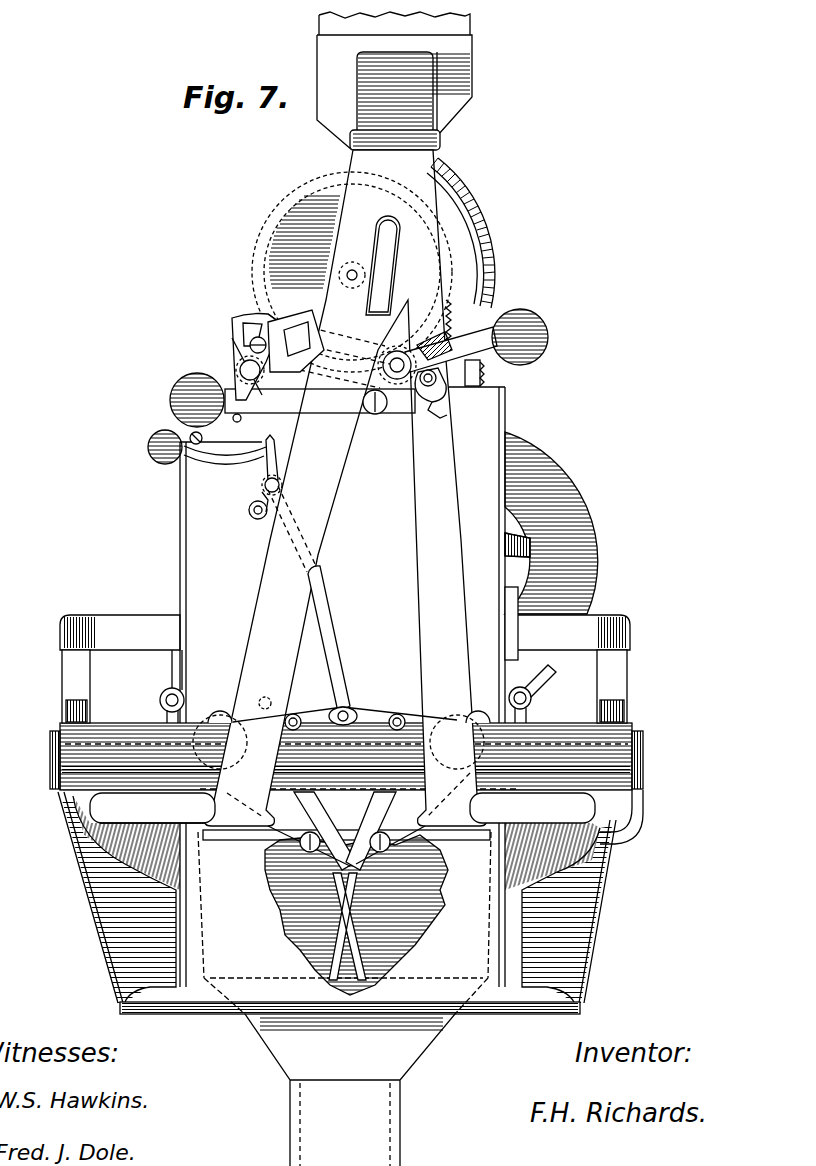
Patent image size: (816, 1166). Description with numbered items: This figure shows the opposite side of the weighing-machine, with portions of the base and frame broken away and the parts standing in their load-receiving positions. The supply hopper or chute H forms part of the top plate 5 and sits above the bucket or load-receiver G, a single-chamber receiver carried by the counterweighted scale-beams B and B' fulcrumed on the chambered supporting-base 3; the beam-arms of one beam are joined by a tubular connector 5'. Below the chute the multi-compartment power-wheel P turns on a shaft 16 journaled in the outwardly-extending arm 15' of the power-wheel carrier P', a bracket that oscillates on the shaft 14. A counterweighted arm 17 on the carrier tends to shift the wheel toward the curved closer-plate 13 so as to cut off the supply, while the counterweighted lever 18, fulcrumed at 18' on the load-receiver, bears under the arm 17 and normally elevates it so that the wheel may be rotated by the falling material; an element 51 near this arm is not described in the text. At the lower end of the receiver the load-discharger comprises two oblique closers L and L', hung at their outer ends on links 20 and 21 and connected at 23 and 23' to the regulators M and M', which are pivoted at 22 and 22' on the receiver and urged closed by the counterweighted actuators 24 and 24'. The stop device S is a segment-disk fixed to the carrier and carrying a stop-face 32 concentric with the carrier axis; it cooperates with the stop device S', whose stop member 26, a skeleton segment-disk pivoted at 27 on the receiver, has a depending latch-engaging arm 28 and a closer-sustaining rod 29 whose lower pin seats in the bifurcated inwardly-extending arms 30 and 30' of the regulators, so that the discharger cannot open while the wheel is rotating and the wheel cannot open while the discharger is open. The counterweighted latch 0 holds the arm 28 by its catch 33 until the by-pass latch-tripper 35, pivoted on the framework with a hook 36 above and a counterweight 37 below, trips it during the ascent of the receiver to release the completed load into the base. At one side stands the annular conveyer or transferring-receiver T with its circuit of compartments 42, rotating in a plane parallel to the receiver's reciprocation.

The supply hopper or chute H is at (326, 56).
The top plate 5 is at (396, 101).
The counterweighted scale-beam B is at (330, 749).
The counterweighted scale-beam B' is at (347, 778).
The bucket or load-receiver G is at (186, 506).
The power-wheel P is at (352, 272).
The power-wheel shaft 16 is at (353, 270).
The carrier arm 15' is at (398, 265).
The closer-plate 13 is at (494, 246).
The counterweighted arm 17 is at (528, 318).
The rack segment 51 is at (481, 372).
The power-wheel carrier P' is at (358, 356).
The shaft 14 is at (434, 388).
The auxiliary actuator 18 is at (292, 404).
The fulcrum 18' is at (380, 423).
The counterweighted latch 0 is at (177, 451).
The catch 33 is at (255, 452).
The stop member 26 is at (230, 321).
The stop-face 32 is at (278, 324).
The stop device S is at (296, 339).
The pivot 27 is at (250, 345).
The stop device S' is at (234, 358).
The latch-engaging arm 28 is at (242, 372).
The hook or projection 36 is at (266, 452).
The by-pass latch-tripper 35 is at (282, 482).
The counterweight 37 is at (252, 518).
The annular conveyer or transferring-receiver T is at (551, 546).
The compartment 42 is at (512, 522).
The closer-sustaining rod 29 is at (322, 622).
The link 21 is at (162, 708).
The counterweighted actuator 24' is at (220, 724).
The pivot 22' is at (266, 689).
The inwardly-extending arm 30' is at (345, 709).
The inwardly-extending arm 30 is at (363, 706).
The pivot 22 is at (418, 705).
The counterweighted actuator 24 is at (463, 726).
The link 20 is at (528, 706).
The chambered supporting-base 3 is at (337, 979).
The regulator M' is at (353, 915).
The regulator M is at (377, 926).
The closer L' is at (296, 834).
The closer L is at (399, 840).
The pivotal connection 23' is at (280, 865).
The pivotal connection 23 is at (408, 873).
The tubular shaft or connector 5' is at (152, 810).